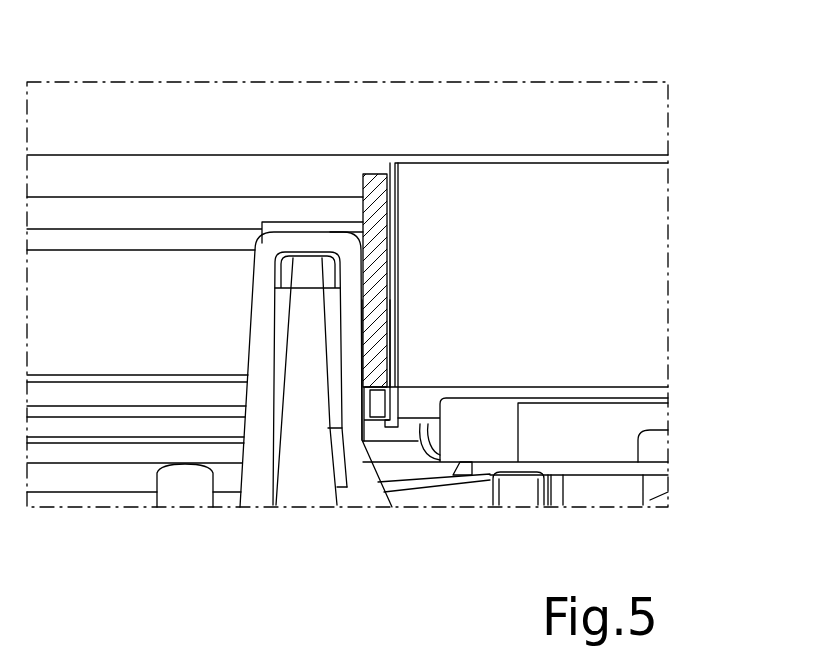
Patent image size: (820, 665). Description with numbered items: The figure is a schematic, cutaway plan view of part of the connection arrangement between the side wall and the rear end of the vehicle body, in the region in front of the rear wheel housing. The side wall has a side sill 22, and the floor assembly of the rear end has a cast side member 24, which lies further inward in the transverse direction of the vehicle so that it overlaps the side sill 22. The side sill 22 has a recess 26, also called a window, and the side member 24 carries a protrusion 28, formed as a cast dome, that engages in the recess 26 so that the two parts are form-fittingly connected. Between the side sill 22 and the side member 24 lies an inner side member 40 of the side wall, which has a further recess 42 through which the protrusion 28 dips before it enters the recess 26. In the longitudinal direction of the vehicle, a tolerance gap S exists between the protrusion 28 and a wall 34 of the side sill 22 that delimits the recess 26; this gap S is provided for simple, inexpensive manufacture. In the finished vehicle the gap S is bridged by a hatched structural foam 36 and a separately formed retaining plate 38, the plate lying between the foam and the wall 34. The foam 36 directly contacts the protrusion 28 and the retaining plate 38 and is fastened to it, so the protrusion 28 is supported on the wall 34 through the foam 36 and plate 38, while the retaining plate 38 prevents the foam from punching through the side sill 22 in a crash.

The side sill 22 is at (672, 162).
The side member 24 is at (525, 500).
The recess 26 is at (167, 214).
The protrusion 28 is at (258, 362).
The wall 34 is at (397, 270).
The structural foam 36 is at (377, 187).
The retaining plate 38 is at (393, 355).
The inner side member 40 is at (620, 428).
The further recess 42 is at (97, 453).
The gap S is at (363, 430).